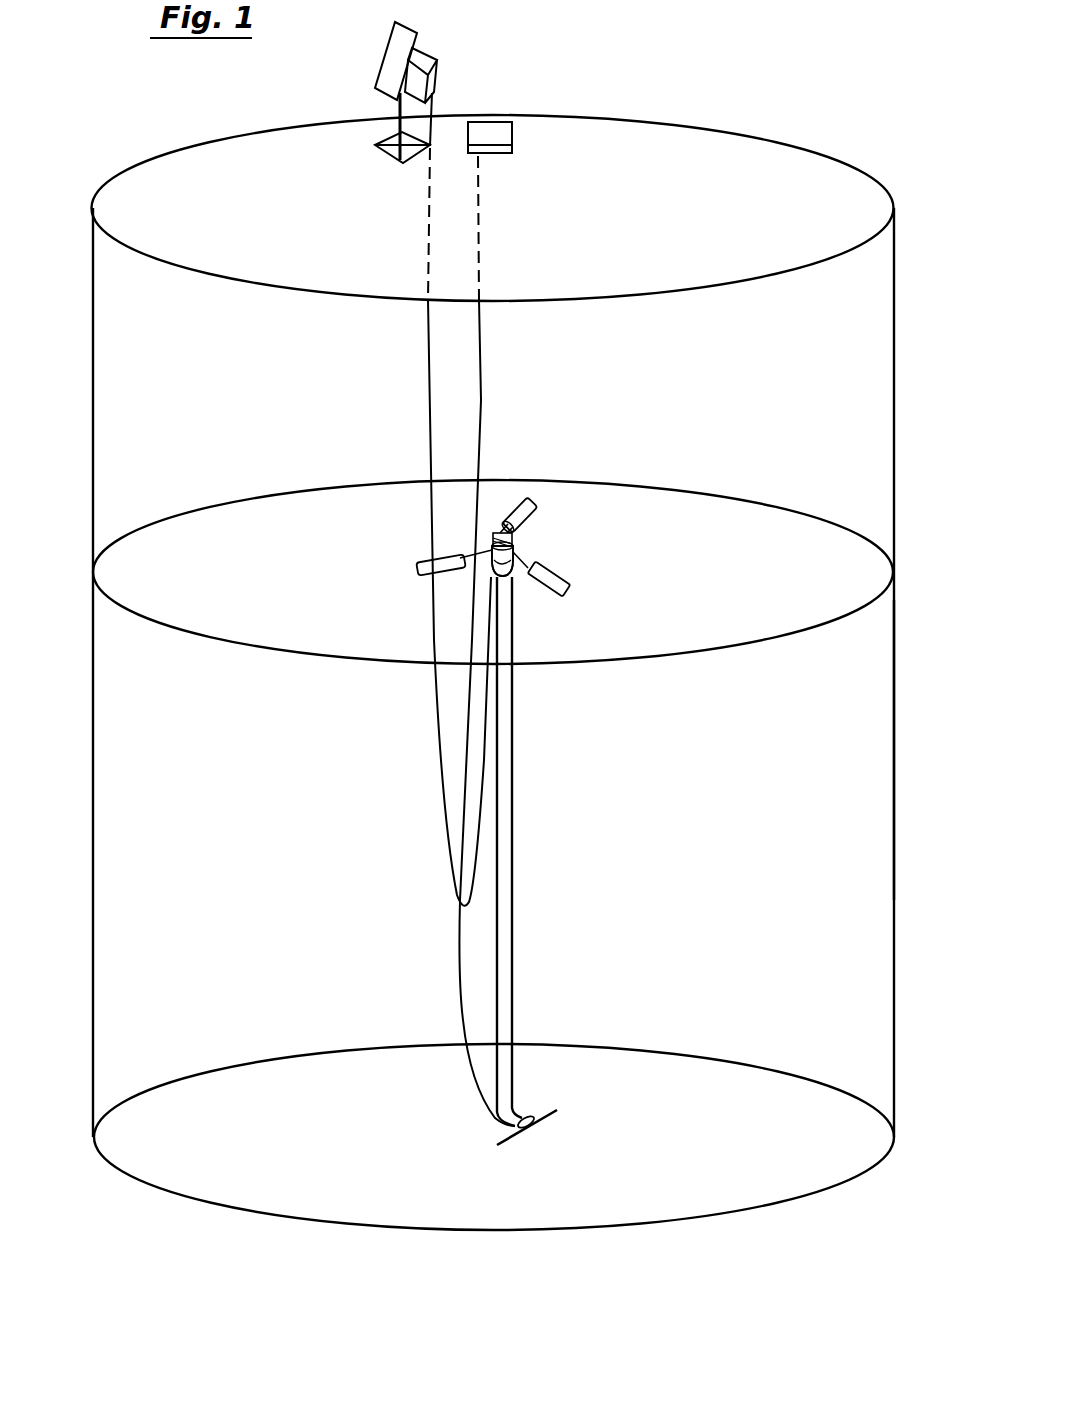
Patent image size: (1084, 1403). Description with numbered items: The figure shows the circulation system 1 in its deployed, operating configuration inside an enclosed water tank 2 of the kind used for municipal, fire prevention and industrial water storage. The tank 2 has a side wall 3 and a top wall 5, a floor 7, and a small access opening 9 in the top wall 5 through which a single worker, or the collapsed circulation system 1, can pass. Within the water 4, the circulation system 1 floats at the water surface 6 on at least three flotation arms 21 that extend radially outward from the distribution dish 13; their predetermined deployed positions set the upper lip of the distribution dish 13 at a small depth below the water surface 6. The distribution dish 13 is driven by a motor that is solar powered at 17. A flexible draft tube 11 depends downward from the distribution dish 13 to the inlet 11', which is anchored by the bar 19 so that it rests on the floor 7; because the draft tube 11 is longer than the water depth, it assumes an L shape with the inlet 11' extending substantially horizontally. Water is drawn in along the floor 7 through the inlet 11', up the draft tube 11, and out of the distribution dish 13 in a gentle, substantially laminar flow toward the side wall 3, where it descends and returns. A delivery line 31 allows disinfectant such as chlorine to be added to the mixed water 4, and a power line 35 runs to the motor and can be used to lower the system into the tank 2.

The circulation system 1 is at (561, 524).
The water tank 2 is at (727, 121).
The side wall 3 is at (893, 724).
The water 4 is at (232, 848).
The top wall 5 is at (683, 223).
The water surface 6 is at (787, 506).
The floor 7 is at (725, 1146).
The access opening 9 is at (508, 137).
The draft tube 11 is at (556, 851).
The inlet 11' is at (553, 1090).
The distribution dish 13 is at (514, 572).
The solar power 17 is at (437, 62).
The bar 19 is at (552, 1114).
The flotation arms 21 is at (512, 508).
The delivery line 31 is at (482, 356).
The power line 35 is at (428, 445).